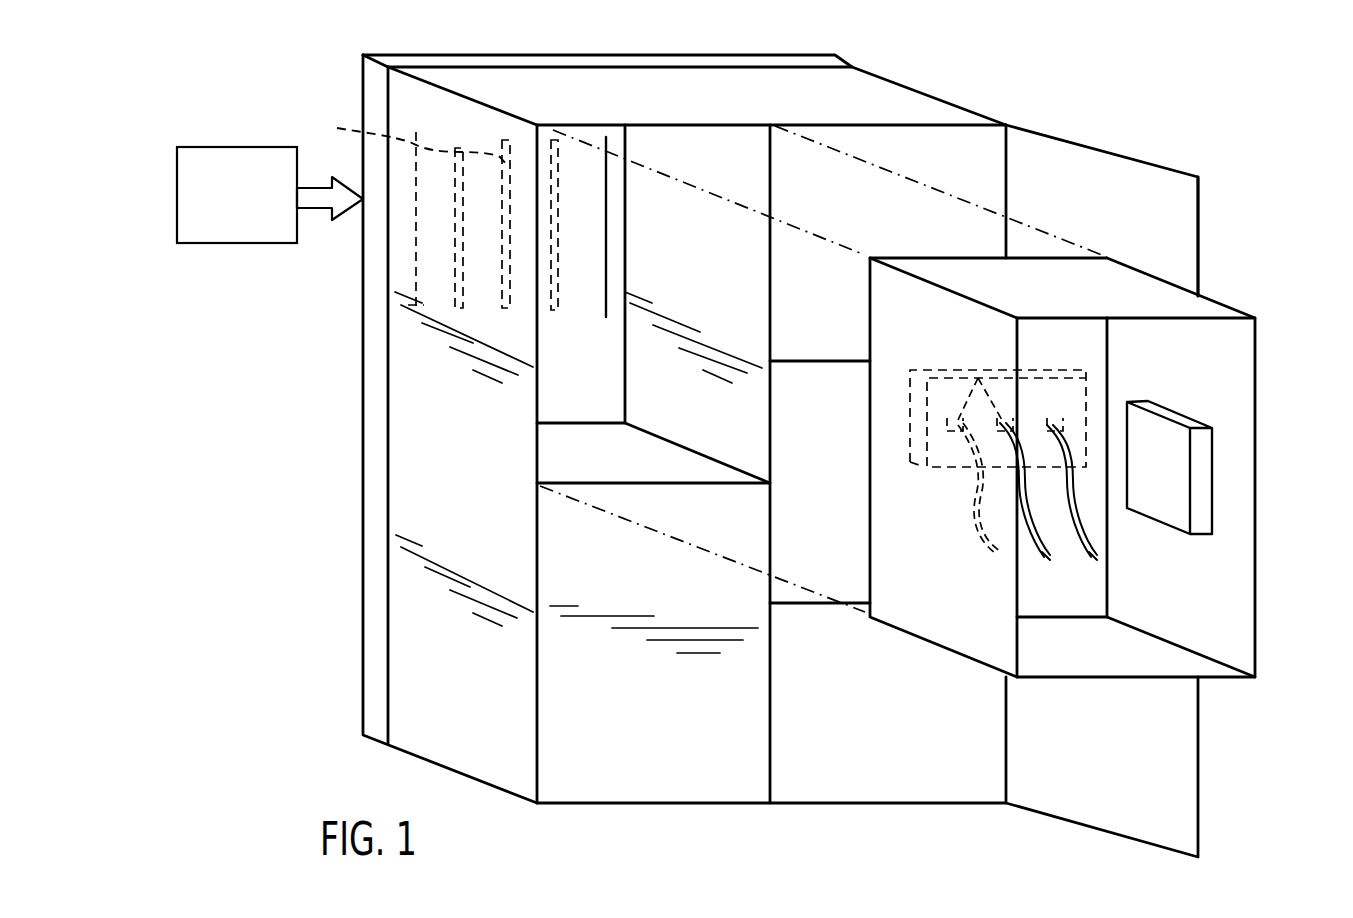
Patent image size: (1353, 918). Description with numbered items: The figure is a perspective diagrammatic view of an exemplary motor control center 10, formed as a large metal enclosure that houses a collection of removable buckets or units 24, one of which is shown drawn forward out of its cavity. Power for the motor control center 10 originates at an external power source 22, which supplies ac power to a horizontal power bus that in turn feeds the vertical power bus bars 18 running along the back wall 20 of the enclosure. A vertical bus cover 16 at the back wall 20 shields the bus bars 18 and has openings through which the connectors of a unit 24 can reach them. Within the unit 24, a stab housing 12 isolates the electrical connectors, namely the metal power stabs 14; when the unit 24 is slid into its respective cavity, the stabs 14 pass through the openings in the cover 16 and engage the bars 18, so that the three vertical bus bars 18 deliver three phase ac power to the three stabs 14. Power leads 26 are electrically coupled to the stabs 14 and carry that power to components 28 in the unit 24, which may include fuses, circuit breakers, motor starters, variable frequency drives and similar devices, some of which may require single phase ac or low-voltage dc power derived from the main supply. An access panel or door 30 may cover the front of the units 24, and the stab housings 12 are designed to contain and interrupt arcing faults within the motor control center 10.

The motor control center 10 is at (1240, 114).
The stab housing 12 is at (912, 427).
The power stabs 14 is at (978, 378).
The vertical bus cover 16 is at (642, 233).
The vertical power bus bars 18 is at (457, 170).
The back wall 20 is at (593, 165).
The external power source 22 is at (230, 243).
The unit 24 is at (978, 150).
The power leads 26 is at (993, 550).
The components 28 is at (1173, 470).
The door 30 is at (1178, 210).